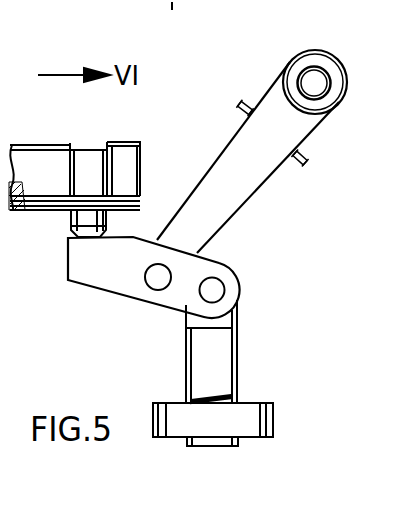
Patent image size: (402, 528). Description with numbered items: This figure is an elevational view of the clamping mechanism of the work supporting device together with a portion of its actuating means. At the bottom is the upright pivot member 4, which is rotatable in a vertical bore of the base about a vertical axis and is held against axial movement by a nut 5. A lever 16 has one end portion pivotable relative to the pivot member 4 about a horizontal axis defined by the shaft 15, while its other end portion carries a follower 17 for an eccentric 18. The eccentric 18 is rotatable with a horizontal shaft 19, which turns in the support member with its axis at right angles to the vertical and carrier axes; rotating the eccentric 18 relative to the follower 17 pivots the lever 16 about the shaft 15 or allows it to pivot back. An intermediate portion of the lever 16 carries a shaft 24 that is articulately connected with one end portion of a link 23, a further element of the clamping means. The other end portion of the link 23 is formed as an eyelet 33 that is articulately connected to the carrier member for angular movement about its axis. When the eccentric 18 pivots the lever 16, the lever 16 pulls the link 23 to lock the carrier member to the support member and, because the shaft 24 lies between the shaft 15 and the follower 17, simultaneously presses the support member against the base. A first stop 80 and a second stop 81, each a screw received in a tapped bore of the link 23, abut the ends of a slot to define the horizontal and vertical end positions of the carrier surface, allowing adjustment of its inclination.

The pivot member 4 is at (238, 443).
The nut 5 is at (262, 417).
The shaft 15 is at (214, 290).
The lever 16 is at (187, 302).
The follower 17 is at (85, 228).
The eccentric 18 is at (98, 186).
The shaft 19 is at (50, 142).
The link 23 is at (331, 93).
The shaft 24 is at (160, 273).
The eyelet 33 is at (333, 54).
The first stop 80 is at (242, 103).
The second stop 81 is at (301, 163).